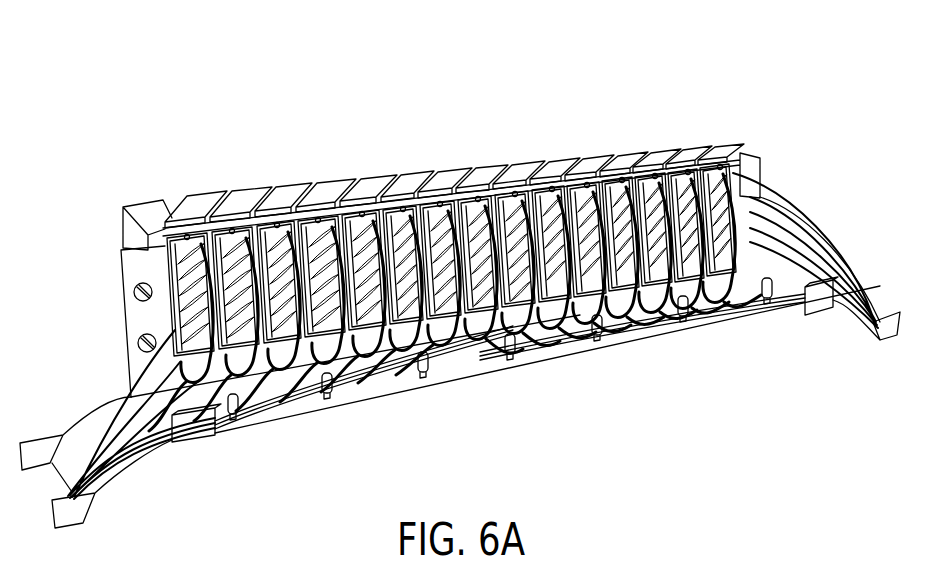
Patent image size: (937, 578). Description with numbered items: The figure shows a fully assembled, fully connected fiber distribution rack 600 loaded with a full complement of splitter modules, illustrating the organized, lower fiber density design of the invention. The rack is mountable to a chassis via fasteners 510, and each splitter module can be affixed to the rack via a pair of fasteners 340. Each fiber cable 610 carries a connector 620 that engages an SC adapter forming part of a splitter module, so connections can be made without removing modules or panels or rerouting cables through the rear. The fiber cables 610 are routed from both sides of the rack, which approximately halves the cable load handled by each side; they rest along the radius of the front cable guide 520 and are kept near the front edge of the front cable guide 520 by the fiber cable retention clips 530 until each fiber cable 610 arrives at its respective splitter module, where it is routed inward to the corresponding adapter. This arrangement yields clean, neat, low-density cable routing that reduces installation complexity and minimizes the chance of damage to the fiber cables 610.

The fully assembled, fully connected fiber distribution rack 600 is at (273, 97).
The fasteners 340 is at (152, 205).
The connector 620 is at (283, 222).
The fasteners 510 is at (137, 340).
The front cable guide 520 is at (378, 392).
The fiber cable retention clips 530 is at (522, 350).
The fiber cable 610 is at (812, 232).